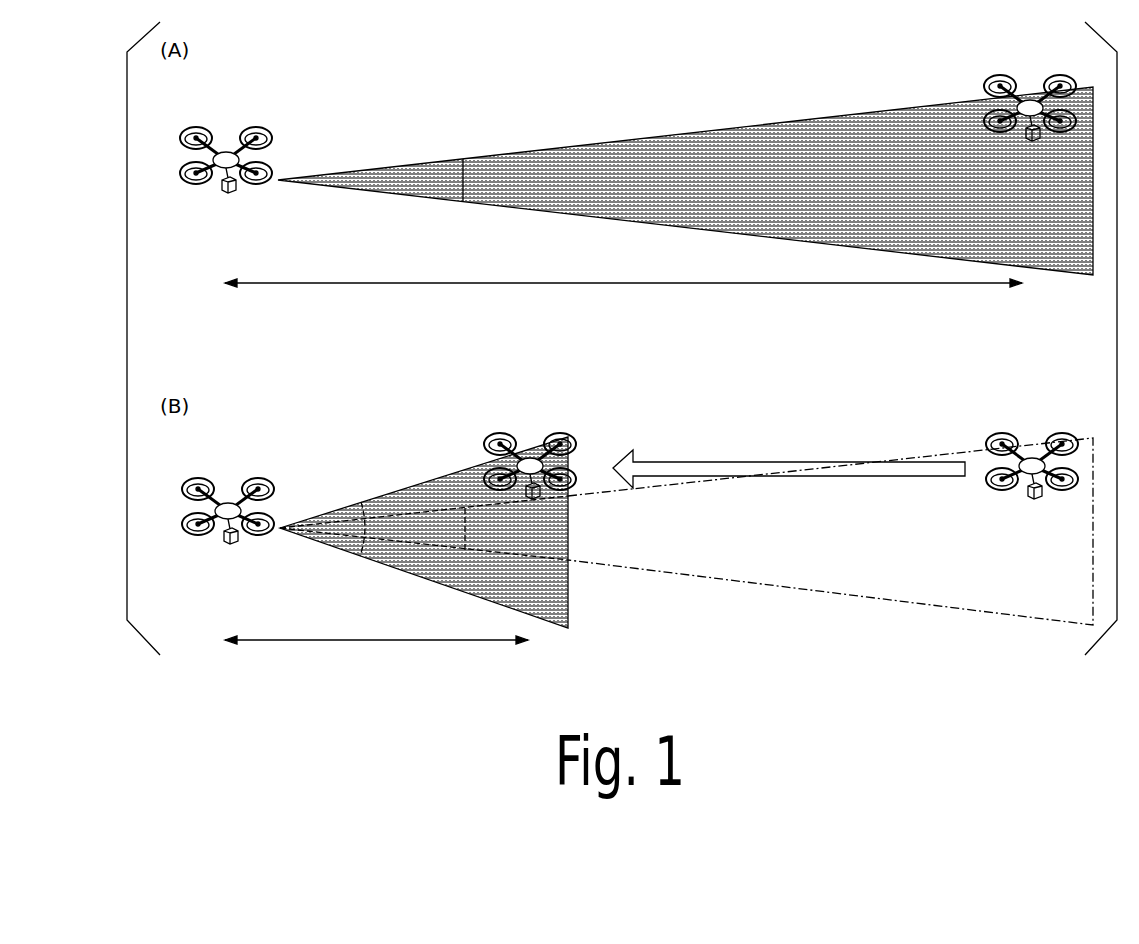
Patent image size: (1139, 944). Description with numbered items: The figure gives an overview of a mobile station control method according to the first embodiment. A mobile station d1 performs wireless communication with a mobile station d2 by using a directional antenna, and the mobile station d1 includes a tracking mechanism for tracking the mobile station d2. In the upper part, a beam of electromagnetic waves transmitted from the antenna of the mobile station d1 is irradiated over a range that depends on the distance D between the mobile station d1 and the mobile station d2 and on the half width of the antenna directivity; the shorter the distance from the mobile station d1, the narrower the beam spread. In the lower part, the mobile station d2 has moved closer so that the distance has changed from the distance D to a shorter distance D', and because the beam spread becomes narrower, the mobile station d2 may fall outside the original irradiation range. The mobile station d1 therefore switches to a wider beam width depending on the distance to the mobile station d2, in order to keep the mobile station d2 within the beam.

The mobile station d1 is at (262, 132).
The mobile station d2 is at (1062, 82).
The distance D is at (623, 273).
The distance D' is at (376, 631).